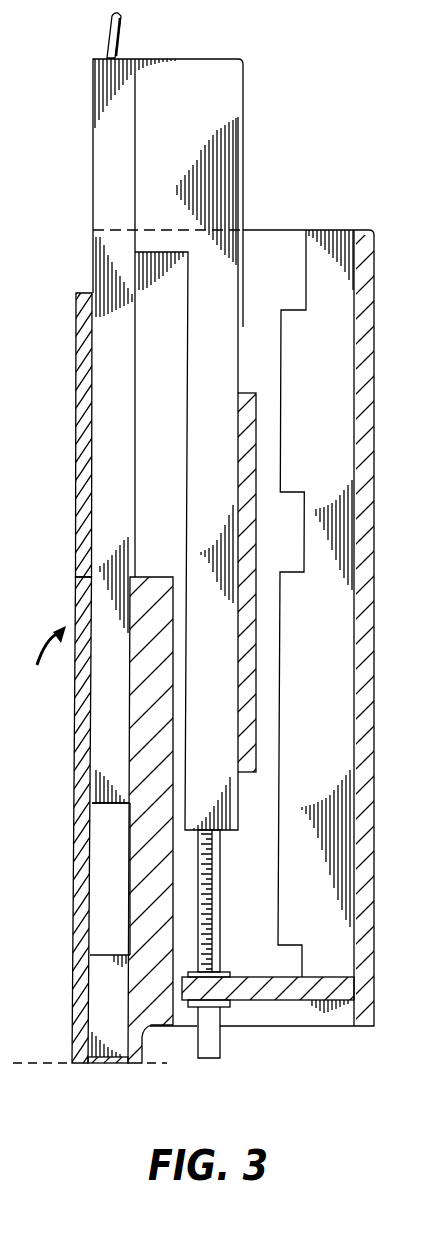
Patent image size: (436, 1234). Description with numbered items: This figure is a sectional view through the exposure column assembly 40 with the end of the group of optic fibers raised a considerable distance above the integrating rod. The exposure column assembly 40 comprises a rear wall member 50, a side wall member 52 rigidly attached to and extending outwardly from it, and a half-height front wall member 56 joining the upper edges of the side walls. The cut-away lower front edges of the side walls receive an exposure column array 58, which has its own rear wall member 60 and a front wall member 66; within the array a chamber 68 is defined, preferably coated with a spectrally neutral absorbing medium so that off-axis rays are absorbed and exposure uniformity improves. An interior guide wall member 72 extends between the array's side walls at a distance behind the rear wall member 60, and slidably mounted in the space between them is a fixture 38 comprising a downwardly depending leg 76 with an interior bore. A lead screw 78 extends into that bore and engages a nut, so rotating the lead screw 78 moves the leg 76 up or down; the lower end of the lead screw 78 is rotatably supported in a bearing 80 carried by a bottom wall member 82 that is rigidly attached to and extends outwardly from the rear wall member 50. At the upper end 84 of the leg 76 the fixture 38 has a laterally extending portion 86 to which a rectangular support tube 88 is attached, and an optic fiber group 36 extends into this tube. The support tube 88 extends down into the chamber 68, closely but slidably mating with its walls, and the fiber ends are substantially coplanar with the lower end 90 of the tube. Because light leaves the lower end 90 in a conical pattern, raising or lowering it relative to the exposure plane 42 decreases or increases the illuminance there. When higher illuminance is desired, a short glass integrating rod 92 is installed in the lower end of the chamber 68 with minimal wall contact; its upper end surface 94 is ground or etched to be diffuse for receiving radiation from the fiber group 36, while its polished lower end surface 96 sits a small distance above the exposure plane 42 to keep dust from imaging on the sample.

The optic fiber group 36 is at (122, 28).
The fixture 38 is at (240, 306).
The exposure column assembly 40 is at (52, 698).
The exposure plane 42 is at (35, 1066).
The rear wall member 50 is at (377, 582).
The side wall member 52 is at (272, 240).
The half-height front wall member 56 is at (75, 465).
The exposure column array 58 is at (73, 742).
The rear wall member 60 is at (152, 578).
The front wall member 66 is at (76, 938).
The chamber 68 is at (97, 884).
The interior guide wall member 72 is at (245, 395).
The leg 76 is at (220, 428).
The lead screw 78 is at (220, 900).
The bearing 80 is at (228, 972).
The bottom wall member 82 is at (293, 993).
The upper end 84 is at (230, 62).
The laterally extending portion 86 is at (222, 160).
The rectangular support tube 88 is at (105, 158).
The lower end 90 is at (100, 807).
The glass integrating rod 92 is at (98, 1003).
The upper end surface 94 is at (105, 953).
The lower end surface 96 is at (113, 1065).